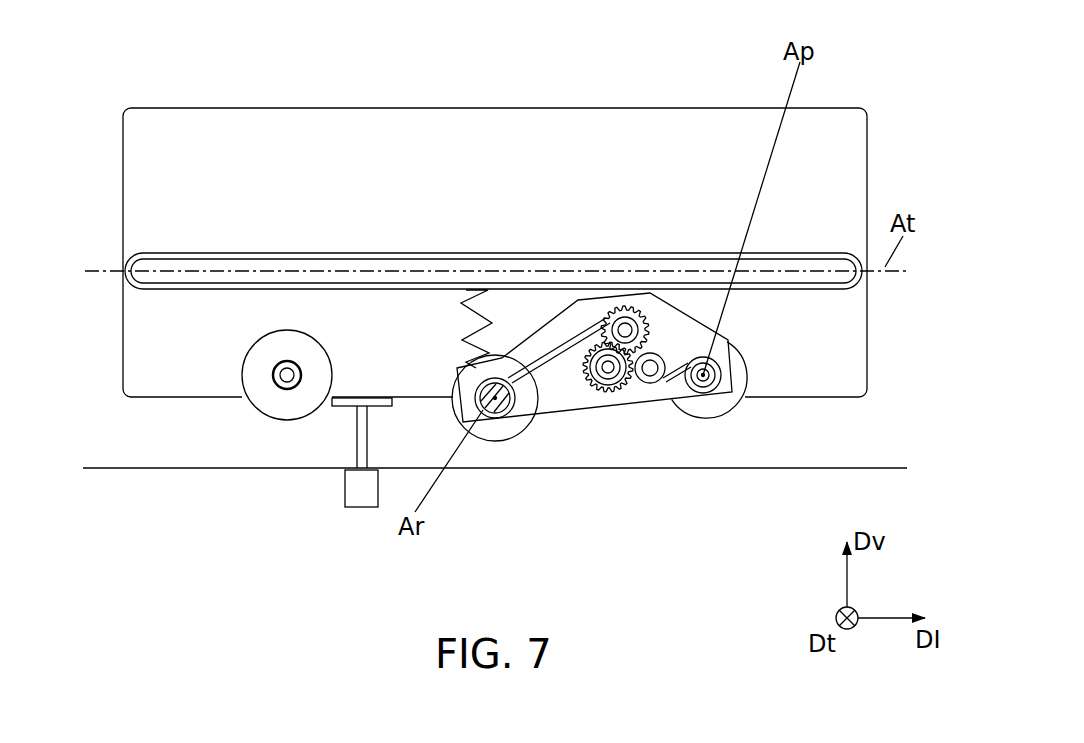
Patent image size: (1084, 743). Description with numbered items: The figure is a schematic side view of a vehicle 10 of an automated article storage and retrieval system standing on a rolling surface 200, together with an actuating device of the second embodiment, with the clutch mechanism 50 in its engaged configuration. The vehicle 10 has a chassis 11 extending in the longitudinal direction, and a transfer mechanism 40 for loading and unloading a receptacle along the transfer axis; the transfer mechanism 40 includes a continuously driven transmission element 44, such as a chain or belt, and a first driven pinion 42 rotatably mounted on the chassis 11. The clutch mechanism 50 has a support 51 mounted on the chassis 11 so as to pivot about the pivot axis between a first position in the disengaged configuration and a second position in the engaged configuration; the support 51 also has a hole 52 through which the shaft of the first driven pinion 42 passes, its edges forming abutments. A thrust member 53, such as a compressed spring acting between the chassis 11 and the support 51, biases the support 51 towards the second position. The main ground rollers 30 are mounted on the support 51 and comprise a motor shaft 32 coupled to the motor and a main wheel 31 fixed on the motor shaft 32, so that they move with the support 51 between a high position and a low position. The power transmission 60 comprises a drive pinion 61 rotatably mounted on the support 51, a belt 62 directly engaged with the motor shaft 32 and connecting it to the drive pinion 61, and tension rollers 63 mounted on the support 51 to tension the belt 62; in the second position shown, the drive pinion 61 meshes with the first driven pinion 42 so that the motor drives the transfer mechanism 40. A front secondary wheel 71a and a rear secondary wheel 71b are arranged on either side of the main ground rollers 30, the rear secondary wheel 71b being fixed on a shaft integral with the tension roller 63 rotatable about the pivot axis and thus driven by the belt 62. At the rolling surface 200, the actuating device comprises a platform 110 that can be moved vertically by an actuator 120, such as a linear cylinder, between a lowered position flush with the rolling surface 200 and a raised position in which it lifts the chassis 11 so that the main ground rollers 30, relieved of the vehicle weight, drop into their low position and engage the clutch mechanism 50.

The vehicle 10 is at (143, 82).
The chassis 11 is at (832, 108).
The transfer mechanism 40 is at (658, 243).
The continuously driven transmission element 44 is at (295, 256).
The clutch mechanism 50 is at (557, 211).
The support 51 is at (558, 330).
The thrust member 53 is at (478, 292).
The main ground rollers 30 is at (481, 480).
The main wheel 31 is at (513, 428).
The motor shaft 32 is at (493, 413).
The first driven pinion 42 is at (592, 390).
The hole 52 is at (605, 408).
The power transmission 60 is at (704, 479).
The drive pinion 61 is at (640, 393).
The belt 62 is at (658, 388).
The tension rollers 63 is at (672, 380).
The front secondary wheel 71a is at (278, 400).
The rear secondary wheel 71b is at (740, 383).
The platform 110 is at (353, 406).
The actuator 120 is at (366, 495).
The rolling surface 200 is at (124, 470).